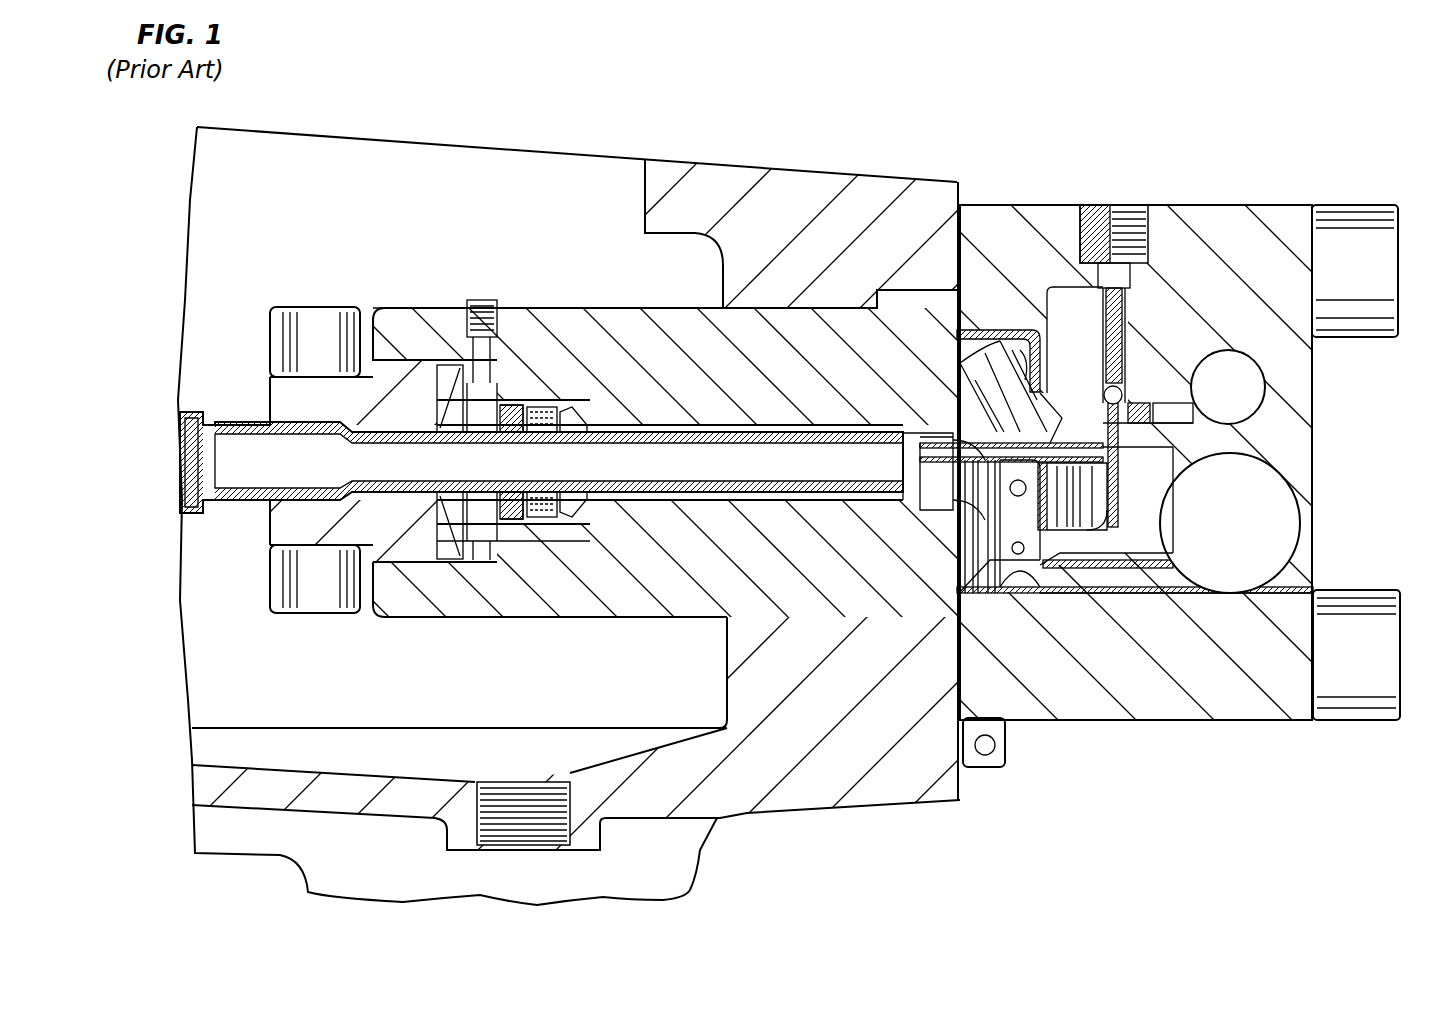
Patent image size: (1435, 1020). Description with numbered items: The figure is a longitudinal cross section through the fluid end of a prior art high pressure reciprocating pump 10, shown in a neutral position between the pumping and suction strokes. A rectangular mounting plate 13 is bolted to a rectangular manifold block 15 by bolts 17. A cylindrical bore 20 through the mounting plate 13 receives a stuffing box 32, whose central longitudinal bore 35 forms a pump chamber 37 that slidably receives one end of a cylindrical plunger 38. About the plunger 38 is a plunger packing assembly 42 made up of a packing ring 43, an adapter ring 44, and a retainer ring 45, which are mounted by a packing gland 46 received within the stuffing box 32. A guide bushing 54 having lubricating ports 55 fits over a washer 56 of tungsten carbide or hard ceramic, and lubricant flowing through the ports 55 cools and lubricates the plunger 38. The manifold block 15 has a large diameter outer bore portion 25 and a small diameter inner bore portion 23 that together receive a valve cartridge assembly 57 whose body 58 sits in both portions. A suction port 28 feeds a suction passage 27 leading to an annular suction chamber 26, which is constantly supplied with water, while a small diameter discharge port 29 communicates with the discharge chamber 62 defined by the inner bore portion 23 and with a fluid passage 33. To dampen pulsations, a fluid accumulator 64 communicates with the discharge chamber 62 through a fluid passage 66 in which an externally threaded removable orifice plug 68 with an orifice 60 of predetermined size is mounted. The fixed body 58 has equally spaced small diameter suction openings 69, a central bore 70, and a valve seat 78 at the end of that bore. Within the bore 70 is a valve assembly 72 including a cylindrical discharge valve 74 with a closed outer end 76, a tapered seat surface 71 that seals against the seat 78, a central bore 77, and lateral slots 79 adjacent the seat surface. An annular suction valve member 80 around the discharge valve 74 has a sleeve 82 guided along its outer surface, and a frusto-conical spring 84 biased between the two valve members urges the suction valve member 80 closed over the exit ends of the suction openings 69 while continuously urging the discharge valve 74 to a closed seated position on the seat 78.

The high pressure reciprocating pump 10 is at (1099, 206).
The mounting plate 13 is at (850, 195).
The manifold block 15 is at (1230, 225).
The bolts 17 is at (1345, 235).
The cylindrical bore 20 is at (756, 322).
The small diameter inner bore portion 23 is at (1150, 540).
The large diameter outer bore portion 25 is at (1018, 594).
The annular suction chamber 26 is at (1042, 594).
The suction passage 27 is at (1145, 582).
The suction port 28 is at (1214, 519).
The discharge port 29 is at (1125, 398).
The stuffing box 32 is at (578, 318).
The fluid passage 33 is at (1124, 330).
The central longitudinal bore 35 is at (655, 497).
The pump chamber 37 is at (910, 496).
The plunger 38 is at (541, 462).
The plunger packing assembly 42 is at (560, 522).
The packing ring 43 is at (575, 408).
The adapter ring 44 is at (515, 408).
The retainer ring 45 is at (590, 420).
The packing gland 46 is at (285, 525).
The guide bushing 54 is at (448, 382).
The lubricating ports 55 is at (463, 382).
The washer 56 is at (490, 380).
The valve cartridge assembly 57 is at (965, 553).
The body 58 is at (965, 415).
The orifice 60 is at (1165, 395).
The discharge chamber 62 is at (1135, 490).
The fluid accumulator 64 is at (1214, 401).
The fluid passage 66 is at (1178, 422).
The orifice plug 68 is at (1124, 402).
The suction openings 69 is at (970, 340).
The central bore 70 is at (1046, 385).
The tapered seat surface 71 is at (1121, 440).
The valve assembly 72 is at (953, 515).
The discharge valve 74 is at (1052, 530).
The closed outer end 76 is at (1120, 462).
The central bore 77 is at (1002, 526).
The valve seat 78 is at (1052, 415).
The lateral slots 79 is at (1102, 498).
The suction valve member 80 is at (948, 420).
The sleeve 82 is at (1020, 370).
The spring 84 is at (925, 435).